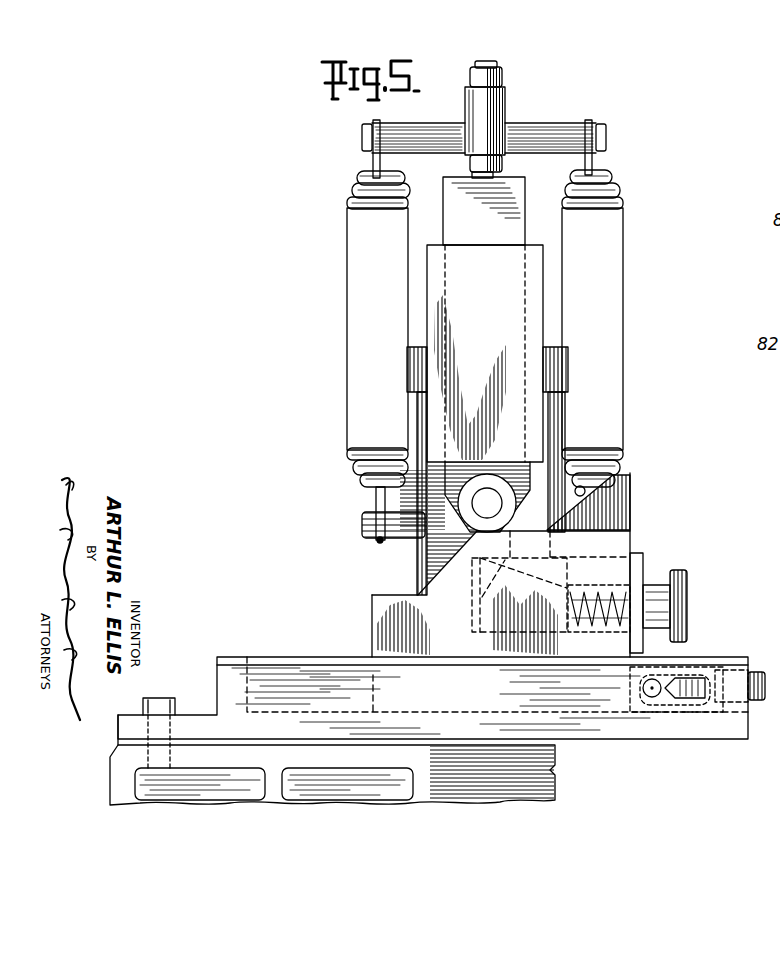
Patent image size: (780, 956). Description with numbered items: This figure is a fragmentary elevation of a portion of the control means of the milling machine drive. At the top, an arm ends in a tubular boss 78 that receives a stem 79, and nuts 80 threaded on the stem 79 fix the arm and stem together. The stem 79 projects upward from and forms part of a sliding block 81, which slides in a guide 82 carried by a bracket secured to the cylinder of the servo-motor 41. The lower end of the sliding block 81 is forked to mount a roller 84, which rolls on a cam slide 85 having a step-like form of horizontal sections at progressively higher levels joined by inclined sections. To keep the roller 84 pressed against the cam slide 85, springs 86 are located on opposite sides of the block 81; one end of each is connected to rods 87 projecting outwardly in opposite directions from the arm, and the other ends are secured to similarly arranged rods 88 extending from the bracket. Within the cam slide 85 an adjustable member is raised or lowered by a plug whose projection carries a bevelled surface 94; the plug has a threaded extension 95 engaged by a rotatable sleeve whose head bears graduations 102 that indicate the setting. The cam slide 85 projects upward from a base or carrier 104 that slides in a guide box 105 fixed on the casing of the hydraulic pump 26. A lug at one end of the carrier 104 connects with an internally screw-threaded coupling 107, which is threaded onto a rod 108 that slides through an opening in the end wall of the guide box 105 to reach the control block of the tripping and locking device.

The hydraulic pump 26 is at (332, 760).
The servo-motor 41 is at (556, 410).
The tubular boss 78 is at (505, 112).
The stem 79 is at (496, 63).
The nuts 80 is at (502, 80).
The sliding block 81 is at (506, 220).
The guide 82 is at (485, 388).
The roller 84 is at (462, 556).
The cam slide 85 is at (372, 633).
The springs 86 is at (346, 320).
The rods 87 is at (425, 123).
The rods 88 is at (400, 540).
The bevelled surface 94 is at (470, 607).
The threaded extension 95 is at (633, 557).
The graduations 102 is at (688, 603).
The base or carrier 104 is at (376, 688).
The guide box 105 is at (270, 675).
The coupling 107 is at (666, 712).
The rod 108 is at (760, 668).